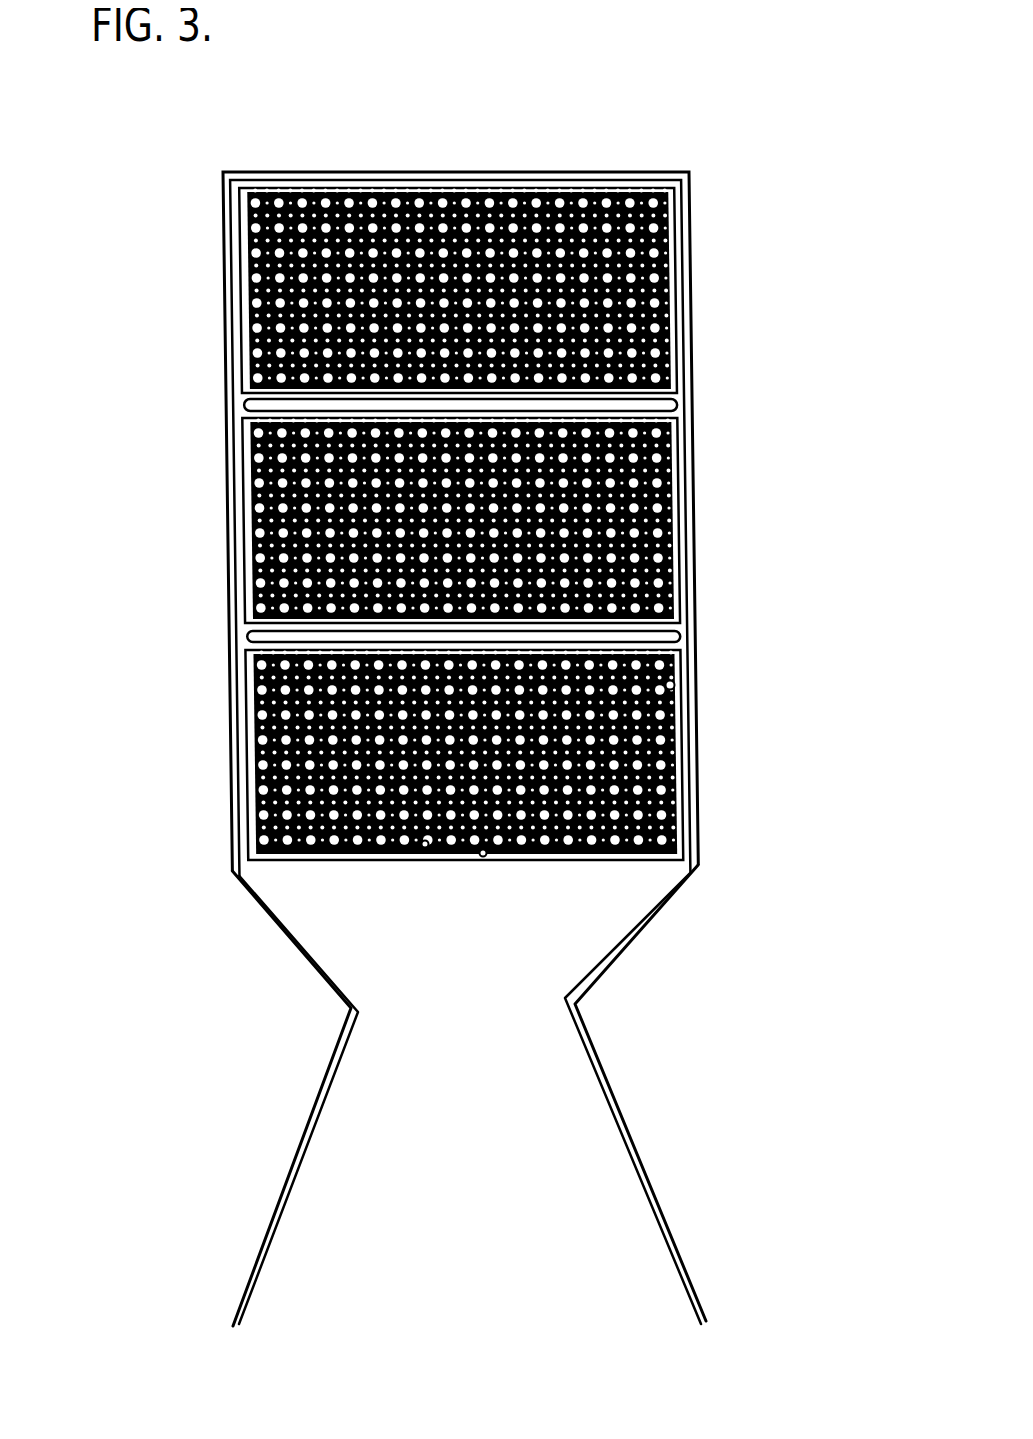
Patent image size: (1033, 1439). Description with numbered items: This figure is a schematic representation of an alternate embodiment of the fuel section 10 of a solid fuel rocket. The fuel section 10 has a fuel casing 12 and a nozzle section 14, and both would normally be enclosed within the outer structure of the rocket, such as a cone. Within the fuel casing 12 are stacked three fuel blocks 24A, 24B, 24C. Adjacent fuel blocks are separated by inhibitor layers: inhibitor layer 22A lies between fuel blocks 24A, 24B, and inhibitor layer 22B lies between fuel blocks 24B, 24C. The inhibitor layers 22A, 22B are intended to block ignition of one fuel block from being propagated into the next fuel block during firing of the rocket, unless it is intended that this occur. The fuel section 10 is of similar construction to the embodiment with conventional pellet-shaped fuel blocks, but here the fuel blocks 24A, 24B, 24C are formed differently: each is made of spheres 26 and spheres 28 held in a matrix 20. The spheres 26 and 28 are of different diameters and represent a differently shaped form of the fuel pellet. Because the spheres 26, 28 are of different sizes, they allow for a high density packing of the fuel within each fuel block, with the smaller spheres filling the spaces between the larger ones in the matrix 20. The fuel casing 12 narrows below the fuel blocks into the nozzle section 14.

The fuel section 10 is at (135, 360).
The fuel casing 12 is at (685, 517).
The nozzle section 14 is at (645, 1168).
The matrix 20 is at (665, 678).
The inhibitor layer 22A is at (669, 630).
The inhibitor layer 22B is at (668, 397).
The fuel block 24A is at (707, 783).
The fuel block 24B is at (198, 503).
The fuel block 24C is at (712, 230).
The sphere 26 is at (417, 840).
The sphere 28 is at (475, 849).